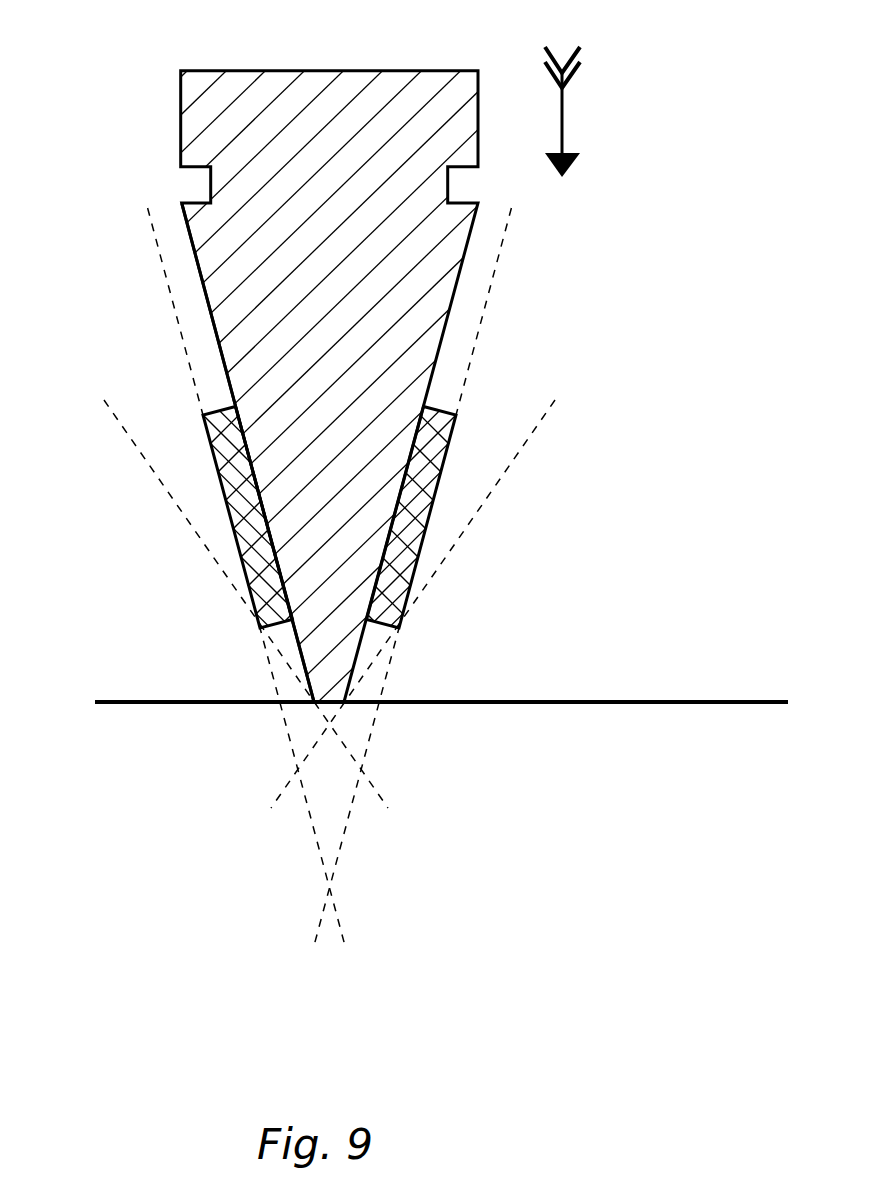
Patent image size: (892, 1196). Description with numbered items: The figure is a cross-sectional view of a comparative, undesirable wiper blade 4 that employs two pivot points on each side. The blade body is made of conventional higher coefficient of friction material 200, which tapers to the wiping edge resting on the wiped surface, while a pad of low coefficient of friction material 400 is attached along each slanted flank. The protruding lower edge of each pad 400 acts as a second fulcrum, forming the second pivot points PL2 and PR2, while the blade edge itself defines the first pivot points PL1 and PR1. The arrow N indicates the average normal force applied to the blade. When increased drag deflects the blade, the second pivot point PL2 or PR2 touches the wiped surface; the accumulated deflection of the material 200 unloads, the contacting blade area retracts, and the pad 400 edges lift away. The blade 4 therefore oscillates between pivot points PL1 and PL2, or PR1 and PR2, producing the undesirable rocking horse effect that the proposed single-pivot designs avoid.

The wiper blade 4 is at (162, 104).
The higher coefficient of friction material 200 is at (203, 290).
The low coefficient of friction material 400 is at (418, 433).
The left first pivot point PL1 is at (312, 698).
The left second pivot point PL2 is at (258, 625).
The right first pivot point PR1 is at (347, 700).
The right second pivot point PR2 is at (402, 623).
The normal force arrow N is at (562, 96).